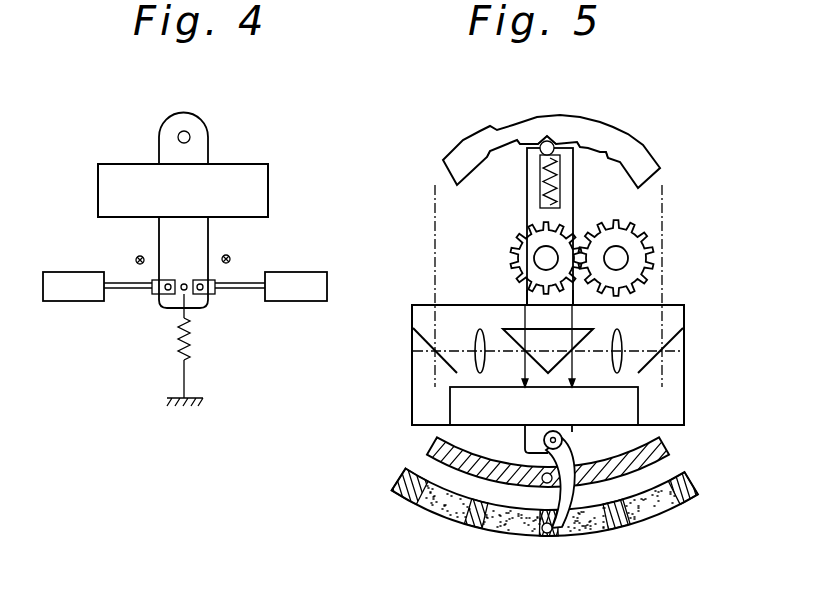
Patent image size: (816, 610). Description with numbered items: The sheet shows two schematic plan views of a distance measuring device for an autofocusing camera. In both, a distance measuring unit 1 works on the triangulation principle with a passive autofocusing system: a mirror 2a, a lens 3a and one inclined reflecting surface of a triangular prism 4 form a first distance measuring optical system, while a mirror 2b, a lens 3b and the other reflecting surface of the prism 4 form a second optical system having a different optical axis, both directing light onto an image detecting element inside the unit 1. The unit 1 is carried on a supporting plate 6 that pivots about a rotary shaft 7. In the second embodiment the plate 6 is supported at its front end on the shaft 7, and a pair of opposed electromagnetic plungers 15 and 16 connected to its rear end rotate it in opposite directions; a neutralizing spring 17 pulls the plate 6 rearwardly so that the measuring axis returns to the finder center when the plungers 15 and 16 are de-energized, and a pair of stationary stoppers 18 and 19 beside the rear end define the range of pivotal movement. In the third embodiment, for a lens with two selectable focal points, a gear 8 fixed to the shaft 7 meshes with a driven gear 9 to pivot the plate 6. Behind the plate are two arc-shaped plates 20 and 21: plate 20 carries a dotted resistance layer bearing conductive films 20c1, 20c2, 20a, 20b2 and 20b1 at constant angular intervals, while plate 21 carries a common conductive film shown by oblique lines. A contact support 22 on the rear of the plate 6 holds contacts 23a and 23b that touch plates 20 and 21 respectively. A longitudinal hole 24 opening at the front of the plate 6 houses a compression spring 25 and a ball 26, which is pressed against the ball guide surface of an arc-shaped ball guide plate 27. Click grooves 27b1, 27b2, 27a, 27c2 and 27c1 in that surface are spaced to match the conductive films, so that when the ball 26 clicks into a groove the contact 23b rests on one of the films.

In FIG. 4, the distance measuring unit 1 is at (270, 187).
In FIG. 5, the distance measuring unit 1 is at (688, 406).
In FIG. 5, the mirror 2a is at (433, 352).
In FIG. 5, the mirror 2b is at (682, 352).
In FIG. 5, the lens 3a is at (473, 337).
In FIG. 5, the lens 3b is at (620, 337).
In FIG. 5, the triangular prism 4 is at (523, 333).
In FIG. 4, the supporting plate 6 is at (168, 234).
In FIG. 5, the supporting plate 6 is at (527, 292).
In FIG. 4, the rotary shaft 7 is at (190, 135).
In FIG. 5, the rotary shaft 7 is at (547, 258).
In FIG. 5, the gear 8 is at (523, 233).
In FIG. 5, the gear 9 is at (637, 250).
In FIG. 4, the plunger 15 is at (297, 293).
In FIG. 4, the plunger 16 is at (73, 292).
In FIG. 4, the neutralizing spring 17 is at (197, 342).
In FIG. 4, the stopper 18 is at (231, 259).
In FIG. 4, the stopper 19 is at (135, 260).
In FIG. 5, the arc-shaped plate 20 is at (698, 503).
In FIG. 5, the conductive film 20a is at (550, 537).
In FIG. 5, the conductive film 20b1 is at (676, 503).
In FIG. 5, the conductive film 20b2 is at (622, 527).
In FIG. 5, the conductive film 20c1 is at (412, 495).
In FIG. 5, the conductive film 20c2 is at (476, 523).
In FIG. 5, the arc-shaped plate 21 is at (656, 457).
In FIG. 5, the contact support 22 is at (570, 453).
In FIG. 5, the contact 23a is at (542, 483).
In FIG. 5, the contact 23b is at (543, 533).
In FIG. 5, the hole 24 is at (567, 203).
In FIG. 5, the compression spring 25 is at (551, 175).
In FIG. 5, the ball 26 is at (557, 143).
In FIG. 5, the ball guide plate 27 is at (445, 162).
In FIG. 5, the click groove 27a is at (552, 140).
In FIG. 5, the click groove 27b1 is at (487, 153).
In FIG. 5, the click groove 27b2 is at (518, 140).
In FIG. 5, the click groove 27c1 is at (610, 155).
In FIG. 5, the click groove 27c2 is at (580, 145).